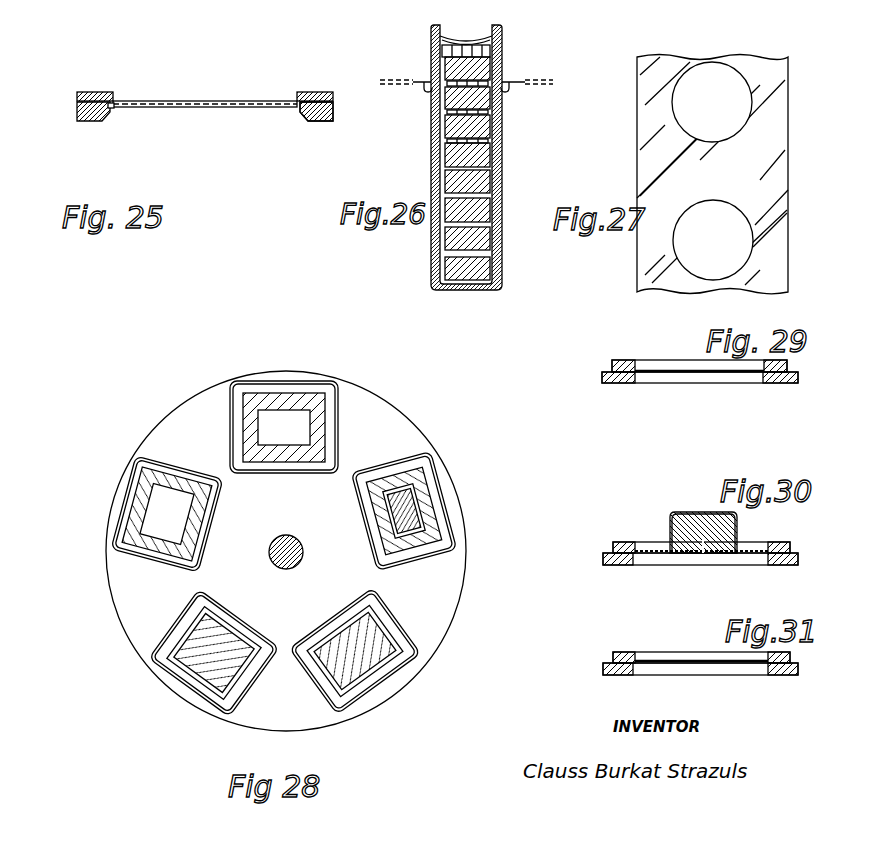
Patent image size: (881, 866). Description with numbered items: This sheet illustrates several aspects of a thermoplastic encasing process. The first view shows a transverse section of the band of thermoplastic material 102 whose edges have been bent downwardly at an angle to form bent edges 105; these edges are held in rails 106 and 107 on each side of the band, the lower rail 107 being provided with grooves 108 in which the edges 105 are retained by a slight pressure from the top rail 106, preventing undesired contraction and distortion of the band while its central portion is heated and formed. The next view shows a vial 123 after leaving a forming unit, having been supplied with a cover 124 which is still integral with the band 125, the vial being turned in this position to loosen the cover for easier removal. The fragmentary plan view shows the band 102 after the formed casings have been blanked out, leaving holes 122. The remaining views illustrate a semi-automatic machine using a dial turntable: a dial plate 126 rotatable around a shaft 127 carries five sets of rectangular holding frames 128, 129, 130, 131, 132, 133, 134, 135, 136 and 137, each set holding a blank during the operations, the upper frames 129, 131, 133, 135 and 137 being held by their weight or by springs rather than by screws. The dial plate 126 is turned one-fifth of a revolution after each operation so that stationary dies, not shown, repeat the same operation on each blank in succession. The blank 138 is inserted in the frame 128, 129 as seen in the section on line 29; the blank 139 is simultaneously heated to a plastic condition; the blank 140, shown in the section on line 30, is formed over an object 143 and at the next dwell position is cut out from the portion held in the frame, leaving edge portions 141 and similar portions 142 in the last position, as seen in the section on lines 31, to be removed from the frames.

In FIG. 25, the band of thermoplastic material 102 is at (183, 100).
In FIG. 27, the band of thermoplastic material 102 is at (660, 150).
In FIG. 25, the bent edges 105 is at (345, 72).
In FIG. 25, the top rail 106 is at (80, 93).
In FIG. 25, the rail 107 is at (99, 122).
In FIG. 25, the grooves 108 is at (310, 122).
In FIG. 27, the holes 122 is at (672, 100).
In FIG. 26, the vial 123 is at (437, 245).
In FIG. 26, the cover 124 is at (437, 28).
In FIG. 26, the band 125 is at (524, 80).
In FIG. 28, the dial plate 126 is at (181, 430).
In FIG. 28, the shaft 127 is at (284, 570).
In FIG. 28, the holding frame 128 is at (165, 641).
In FIG. 29, the holding frame 128 is at (606, 383).
In FIG. 28, the upper frame 129 is at (167, 673).
In FIG. 29, the upper frame 129 is at (614, 361).
In FIG. 28, the holding frame 130 is at (355, 710).
In FIG. 28, the upper frame 131 is at (380, 658).
In FIG. 28, the holding frame 132 is at (445, 555).
In FIG. 30, the holding frame 132 is at (605, 560).
In FIG. 28, the upper frame 133 is at (440, 520).
In FIG. 30, the upper frame 133 is at (620, 543).
In FIG. 28, the holding frame 134 is at (338, 412).
In FIG. 31, the holding frame 134 is at (606, 673).
In FIG. 28, the upper frame 135 is at (305, 393).
In FIG. 31, the upper frame 135 is at (614, 657).
In FIG. 28, the holding frame 136 is at (130, 463).
In FIG. 28, the upper frame 137 is at (140, 455).
In FIG. 28, the blank 138 is at (206, 680).
In FIG. 29, the blank 138 is at (688, 374).
In FIG. 28, the blank 139 is at (412, 666).
In FIG. 28, the blank 140 is at (412, 478).
In FIG. 30, the blank 140 is at (690, 512).
In FIG. 28, the edge portions 141 is at (250, 418).
In FIG. 31, the edge portions 141 is at (673, 636).
In FIG. 28, the edge portions 142 is at (125, 556).
In FIG. 30, the object 143 is at (703, 554).
In FIG. 28, the section line 29— 29 is at (127, 770).
In FIG. 28, the section line 30— 30 is at (338, 517).
In FIG. 28, the section lines 31— 31 is at (284, 484).